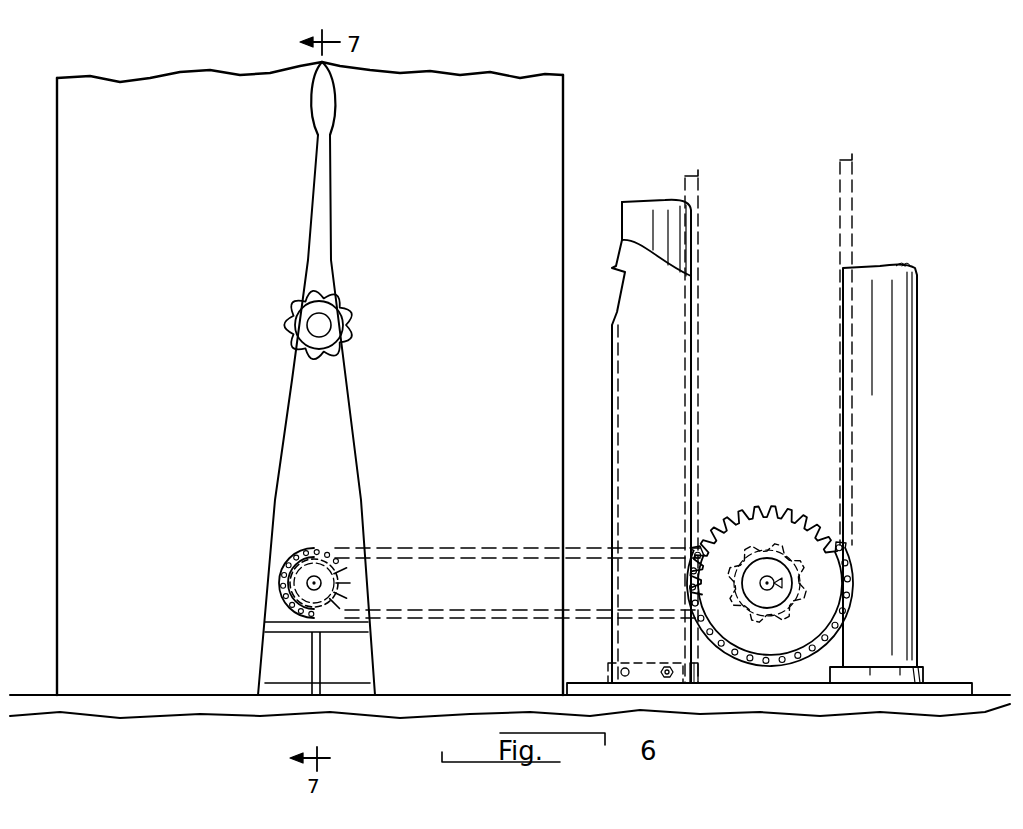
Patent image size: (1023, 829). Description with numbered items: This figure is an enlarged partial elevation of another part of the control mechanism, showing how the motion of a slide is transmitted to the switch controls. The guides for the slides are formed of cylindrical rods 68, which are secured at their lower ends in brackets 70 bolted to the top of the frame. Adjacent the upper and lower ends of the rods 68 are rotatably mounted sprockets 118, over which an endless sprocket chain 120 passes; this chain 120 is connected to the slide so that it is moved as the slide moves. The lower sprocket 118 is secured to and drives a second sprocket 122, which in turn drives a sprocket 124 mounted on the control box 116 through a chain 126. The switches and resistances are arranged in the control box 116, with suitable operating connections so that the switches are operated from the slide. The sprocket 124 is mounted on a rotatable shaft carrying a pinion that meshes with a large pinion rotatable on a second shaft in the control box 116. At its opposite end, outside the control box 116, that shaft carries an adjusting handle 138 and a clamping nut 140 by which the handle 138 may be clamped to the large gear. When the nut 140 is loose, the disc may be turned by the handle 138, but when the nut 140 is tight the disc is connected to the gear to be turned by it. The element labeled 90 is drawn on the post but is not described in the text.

The control box 116 is at (562, 134).
The adjusting handle 138 is at (328, 198).
The clamping nut 140 is at (343, 323).
The sprocket 124 is at (293, 573).
The chain 126 is at (443, 546).
The sprocket 118 is at (785, 526).
The second sprocket 122 is at (750, 570).
The cylindrical rod 68 is at (649, 206).
The inner post 90 is at (632, 292).
The endless sprocket chain 120 is at (850, 202).
The bracket 70 is at (913, 670).